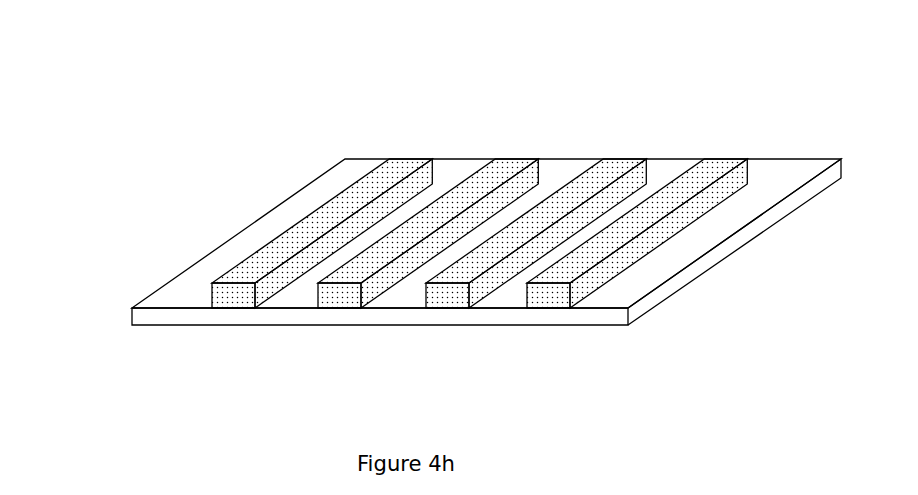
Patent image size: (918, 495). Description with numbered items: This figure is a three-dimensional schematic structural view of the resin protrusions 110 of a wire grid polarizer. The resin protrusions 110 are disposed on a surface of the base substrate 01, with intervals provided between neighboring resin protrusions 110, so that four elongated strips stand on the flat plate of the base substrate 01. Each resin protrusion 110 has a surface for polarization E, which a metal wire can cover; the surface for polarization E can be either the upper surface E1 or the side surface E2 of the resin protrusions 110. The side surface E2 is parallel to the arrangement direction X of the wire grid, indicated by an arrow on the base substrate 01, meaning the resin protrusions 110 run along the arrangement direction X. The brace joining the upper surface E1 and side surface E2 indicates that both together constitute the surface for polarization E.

The base substrate 01 is at (143, 322).
The resin protrusions 110 is at (238, 295).
The surface for polarization E is at (370, 216).
The upper surface E1 is at (317, 243).
The side surface E2 is at (428, 212).
The arrangement direction of the wire grid X is at (642, 280).